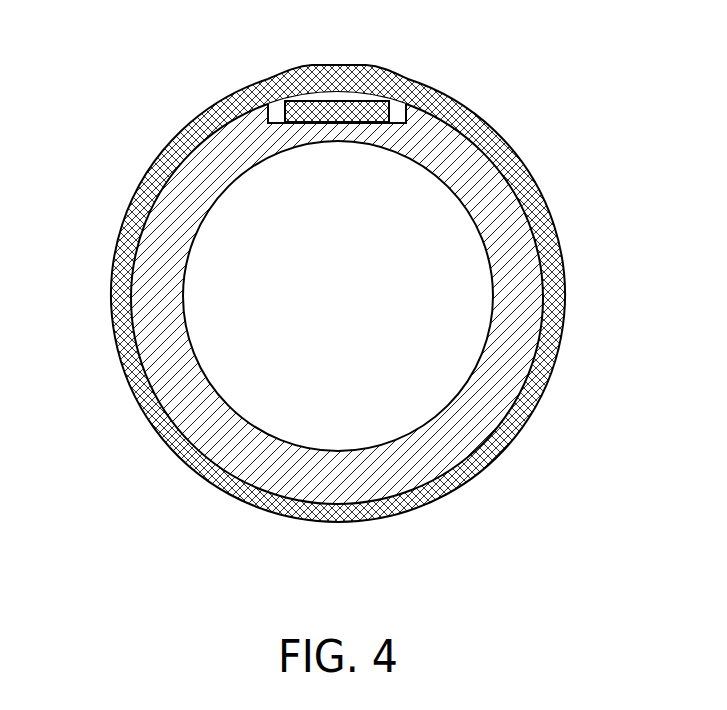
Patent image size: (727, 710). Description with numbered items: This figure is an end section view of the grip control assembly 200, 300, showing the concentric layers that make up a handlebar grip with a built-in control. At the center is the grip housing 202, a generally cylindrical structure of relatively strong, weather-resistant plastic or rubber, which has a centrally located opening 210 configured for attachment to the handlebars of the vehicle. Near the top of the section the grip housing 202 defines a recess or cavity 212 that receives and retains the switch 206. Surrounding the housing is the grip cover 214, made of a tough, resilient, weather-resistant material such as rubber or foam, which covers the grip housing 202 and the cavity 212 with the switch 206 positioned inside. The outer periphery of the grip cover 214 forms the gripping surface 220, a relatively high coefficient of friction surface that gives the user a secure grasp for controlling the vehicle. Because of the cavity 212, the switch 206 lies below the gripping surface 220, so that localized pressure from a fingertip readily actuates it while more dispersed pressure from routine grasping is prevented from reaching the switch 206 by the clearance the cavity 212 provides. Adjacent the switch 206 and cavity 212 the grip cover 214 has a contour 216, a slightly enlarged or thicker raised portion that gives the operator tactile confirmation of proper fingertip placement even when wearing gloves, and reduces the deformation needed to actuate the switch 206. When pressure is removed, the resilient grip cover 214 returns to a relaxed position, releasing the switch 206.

The grip control assembly 200 is at (341, 316).
The grip control assembly 300 is at (341, 273).
The grip housing 202 is at (513, 251).
The switch 206 is at (392, 111).
The centrally located opening 210 is at (402, 372).
The recess or cavity 212 is at (275, 111).
The grip cover 214 is at (123, 372).
The contour 216 is at (343, 65).
The gripping surface 220 is at (517, 160).